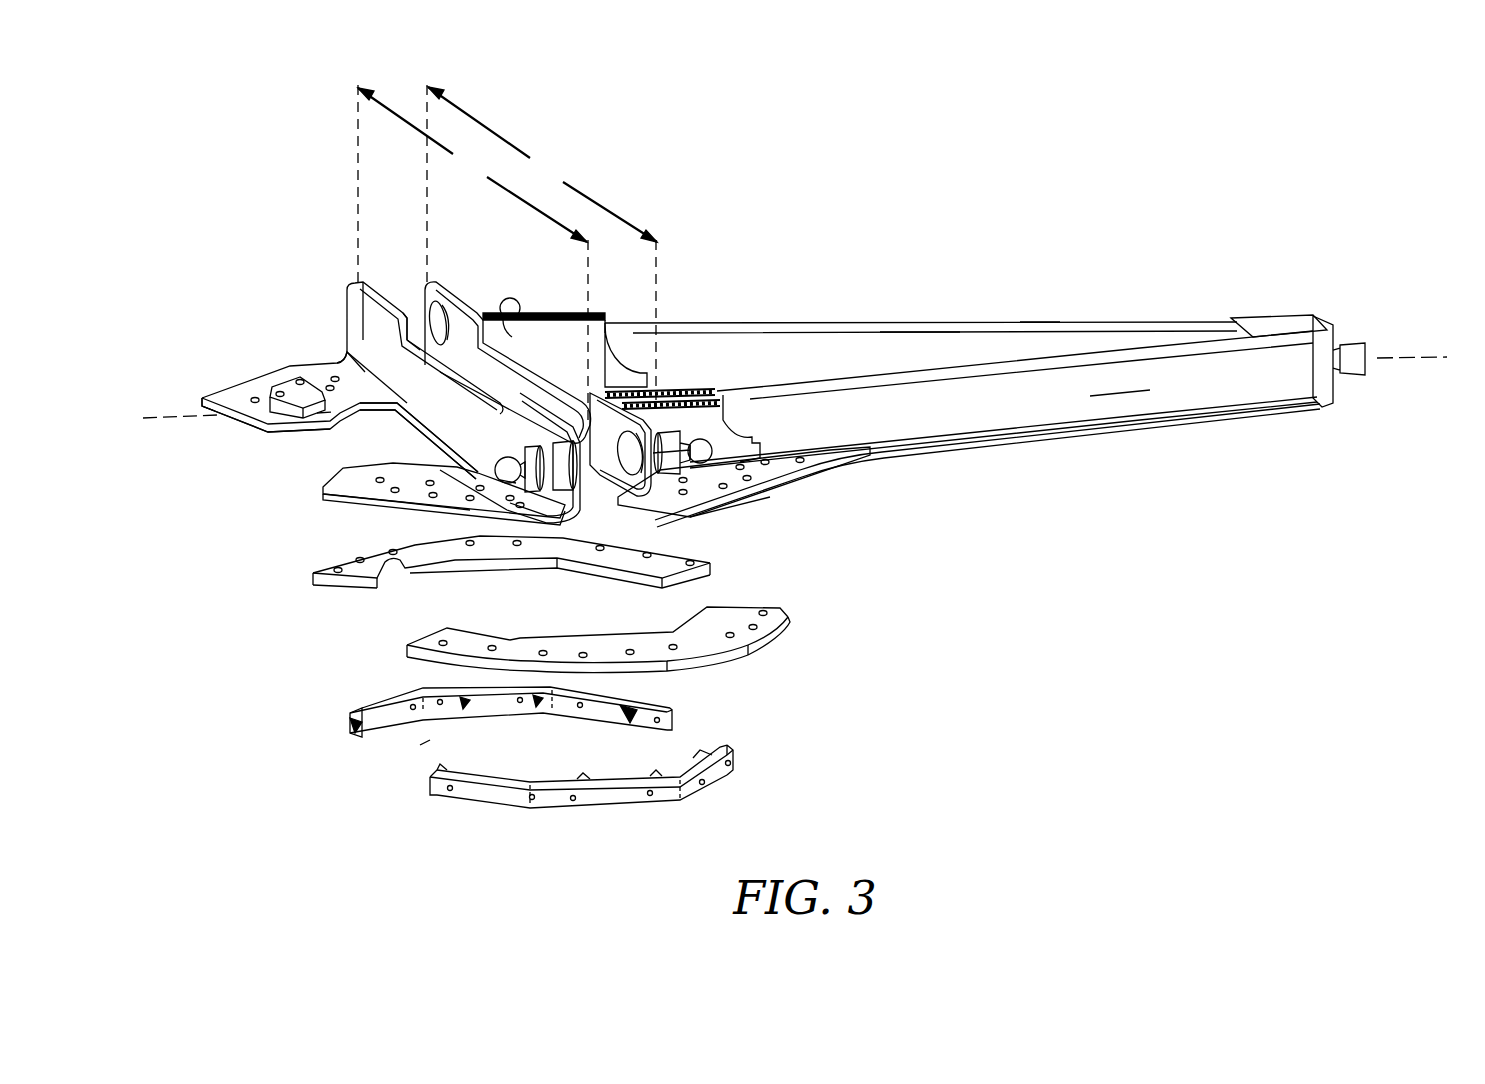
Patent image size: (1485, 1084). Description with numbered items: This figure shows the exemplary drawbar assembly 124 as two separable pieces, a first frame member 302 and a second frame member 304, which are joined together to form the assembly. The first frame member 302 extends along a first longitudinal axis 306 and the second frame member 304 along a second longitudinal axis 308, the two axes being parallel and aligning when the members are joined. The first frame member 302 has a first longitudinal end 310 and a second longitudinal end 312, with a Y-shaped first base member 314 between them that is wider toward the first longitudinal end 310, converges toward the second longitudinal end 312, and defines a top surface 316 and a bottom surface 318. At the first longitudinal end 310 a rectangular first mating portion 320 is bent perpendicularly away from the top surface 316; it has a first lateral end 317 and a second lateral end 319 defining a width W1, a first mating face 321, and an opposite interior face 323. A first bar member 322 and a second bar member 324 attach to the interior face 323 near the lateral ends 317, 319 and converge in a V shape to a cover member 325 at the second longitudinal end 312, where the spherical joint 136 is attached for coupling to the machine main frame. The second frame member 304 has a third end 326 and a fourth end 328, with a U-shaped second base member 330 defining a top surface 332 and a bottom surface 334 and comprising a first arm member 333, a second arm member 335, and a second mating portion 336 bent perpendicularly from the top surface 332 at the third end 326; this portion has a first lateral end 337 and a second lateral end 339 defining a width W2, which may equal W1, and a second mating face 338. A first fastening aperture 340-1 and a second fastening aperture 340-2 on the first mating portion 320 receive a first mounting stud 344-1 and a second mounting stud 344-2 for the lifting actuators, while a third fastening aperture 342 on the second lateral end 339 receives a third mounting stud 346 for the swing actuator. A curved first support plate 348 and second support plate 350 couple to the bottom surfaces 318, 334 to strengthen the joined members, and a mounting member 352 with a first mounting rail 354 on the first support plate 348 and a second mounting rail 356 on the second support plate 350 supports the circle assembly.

The drawbar assembly 124 is at (1041, 243).
The spherical joint 136 is at (1355, 377).
The first frame member 302 is at (821, 307).
The second frame member 304 is at (266, 349).
The first longitudinal axis 306 is at (1410, 356).
The second longitudinal axis 308 is at (187, 418).
The first longitudinal end 310 is at (463, 278).
The second longitudinal end 312 is at (1266, 300).
The first base member 314 is at (852, 456).
The top surface 316 is at (793, 472).
The first lateral end 317 is at (425, 327).
The bottom surface 318 is at (767, 497).
The second lateral end 319 is at (693, 453).
The first mating portion 320 is at (531, 337).
The first mating face 321 is at (422, 322).
The first bar member 322 is at (907, 350).
The interior face 323 is at (545, 381).
The second bar member 324 is at (1120, 392).
The cover member 325 is at (1330, 405).
The third end 326 is at (328, 285).
The fourth end 328 is at (192, 387).
The second base member 330 is at (230, 380).
The top surface 332 is at (350, 480).
The first arm member 333 is at (234, 434).
The bottom surface 334 is at (357, 503).
The second arm member 335 is at (397, 504).
The second mating portion 336 is at (466, 422).
The first lateral end 337 is at (338, 360).
The second mating face 338 is at (376, 298).
The second lateral end 339 is at (607, 490).
The first fastening aperture 340-1 is at (440, 300).
The second fastening aperture 340-2 is at (665, 443).
The third fastening aperture 342 is at (573, 483).
The first mounting stud 344-1 is at (600, 312).
The second mounting stud 344-2 is at (697, 435).
The third mounting stud 346 is at (507, 480).
The first support plate 348 is at (700, 643).
The second support plate 350 is at (480, 550).
The mounting member 352 is at (374, 769).
The first mounting rail 354 is at (473, 793).
The second mounting rail 356 is at (380, 717).
The width of the first mating portion W1 is at (542, 242).
The width of the second mating portion W2 is at (473, 255).